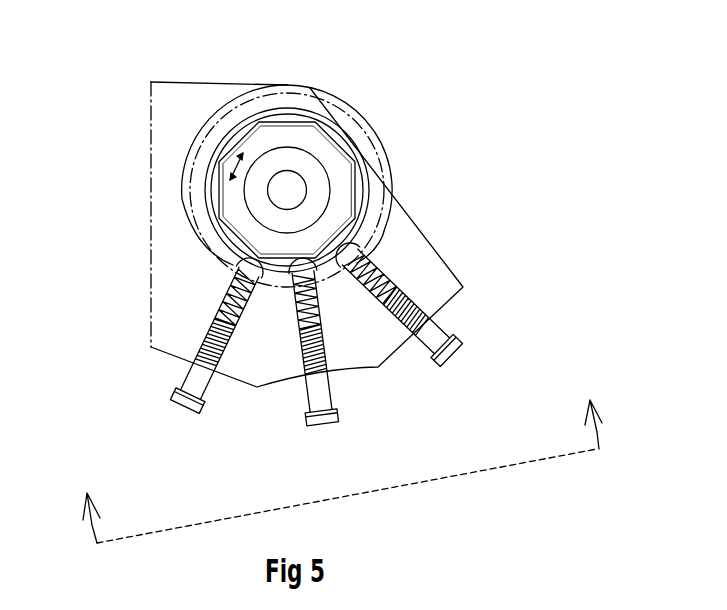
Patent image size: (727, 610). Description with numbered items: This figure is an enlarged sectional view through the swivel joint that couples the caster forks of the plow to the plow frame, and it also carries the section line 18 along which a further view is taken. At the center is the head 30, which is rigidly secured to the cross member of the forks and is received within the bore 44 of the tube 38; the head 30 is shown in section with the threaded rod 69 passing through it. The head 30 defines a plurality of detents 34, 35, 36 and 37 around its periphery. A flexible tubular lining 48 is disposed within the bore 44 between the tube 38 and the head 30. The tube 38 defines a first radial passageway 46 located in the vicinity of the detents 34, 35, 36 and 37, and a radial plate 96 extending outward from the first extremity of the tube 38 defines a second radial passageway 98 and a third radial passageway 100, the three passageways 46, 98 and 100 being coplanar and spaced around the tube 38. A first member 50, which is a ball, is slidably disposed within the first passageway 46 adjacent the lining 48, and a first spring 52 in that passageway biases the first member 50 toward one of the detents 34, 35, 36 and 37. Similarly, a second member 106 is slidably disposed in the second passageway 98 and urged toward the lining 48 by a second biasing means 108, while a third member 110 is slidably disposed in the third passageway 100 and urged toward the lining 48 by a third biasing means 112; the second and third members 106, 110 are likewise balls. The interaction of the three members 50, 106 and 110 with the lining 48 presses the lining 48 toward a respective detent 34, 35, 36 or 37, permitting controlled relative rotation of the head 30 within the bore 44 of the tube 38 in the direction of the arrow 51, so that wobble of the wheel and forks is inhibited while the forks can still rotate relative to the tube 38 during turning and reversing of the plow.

The line 18— 18 is at (334, 449).
The head 30 is at (310, 137).
The detent 34 is at (353, 160).
The detent 35 is at (357, 189).
The detent 36 is at (365, 223).
The detent 37 is at (279, 353).
The tube 38 is at (220, 125).
The bore 44 is at (210, 162).
The first radial passageway 46 is at (338, 370).
The flexible tubular lining 48 is at (297, 123).
The first member 50 is at (375, 254).
The arrow 51 is at (217, 177).
The first spring 52 is at (325, 320).
The threaded rod 69 is at (287, 190).
The radial plate 96 is at (170, 230).
The second radial passageway 98 is at (430, 308).
The third radial passageway 100 is at (203, 327).
The second member 106 is at (372, 243).
The second biasing means 108 is at (327, 270).
The third member 110 is at (232, 272).
The third biasing means 112 is at (193, 355).